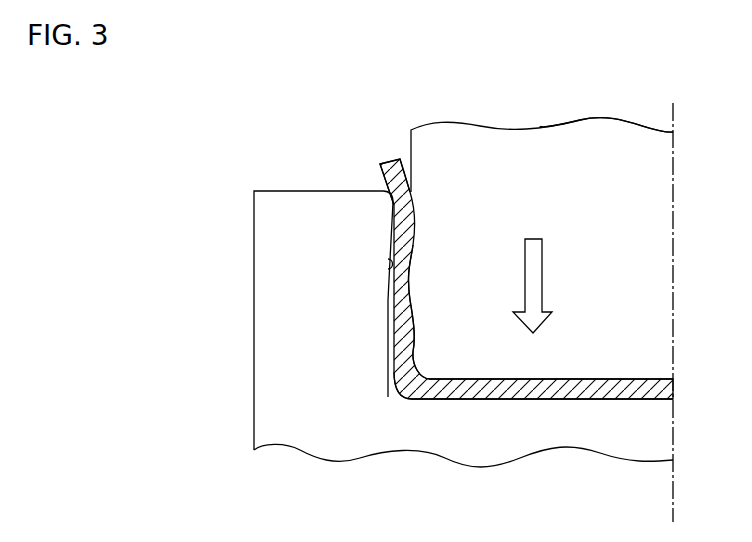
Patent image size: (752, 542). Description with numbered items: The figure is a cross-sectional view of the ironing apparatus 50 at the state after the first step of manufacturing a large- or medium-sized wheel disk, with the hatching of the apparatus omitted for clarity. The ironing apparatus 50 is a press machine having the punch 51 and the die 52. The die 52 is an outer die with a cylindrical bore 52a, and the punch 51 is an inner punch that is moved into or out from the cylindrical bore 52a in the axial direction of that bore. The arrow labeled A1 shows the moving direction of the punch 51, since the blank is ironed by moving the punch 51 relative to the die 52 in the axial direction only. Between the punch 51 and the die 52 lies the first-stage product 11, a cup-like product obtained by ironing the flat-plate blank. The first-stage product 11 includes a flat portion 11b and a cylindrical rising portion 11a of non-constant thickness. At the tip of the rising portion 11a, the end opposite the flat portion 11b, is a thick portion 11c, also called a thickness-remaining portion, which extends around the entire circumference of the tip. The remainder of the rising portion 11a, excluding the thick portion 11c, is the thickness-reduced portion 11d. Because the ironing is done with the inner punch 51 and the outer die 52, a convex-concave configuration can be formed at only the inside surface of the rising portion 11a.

The first-stage product 11 is at (440, 400).
The rising portion 11a is at (400, 341).
The flat portion 11b is at (582, 400).
The thick portion 11c is at (384, 170).
The thickness-reduced portion 11d is at (400, 298).
The ironing apparatus 50 is at (511, 102).
The punch 51 is at (579, 142).
The die 52 is at (276, 425).
The cylindrical bore 52a is at (387, 270).
The moving direction of the punch A1 is at (533, 278).